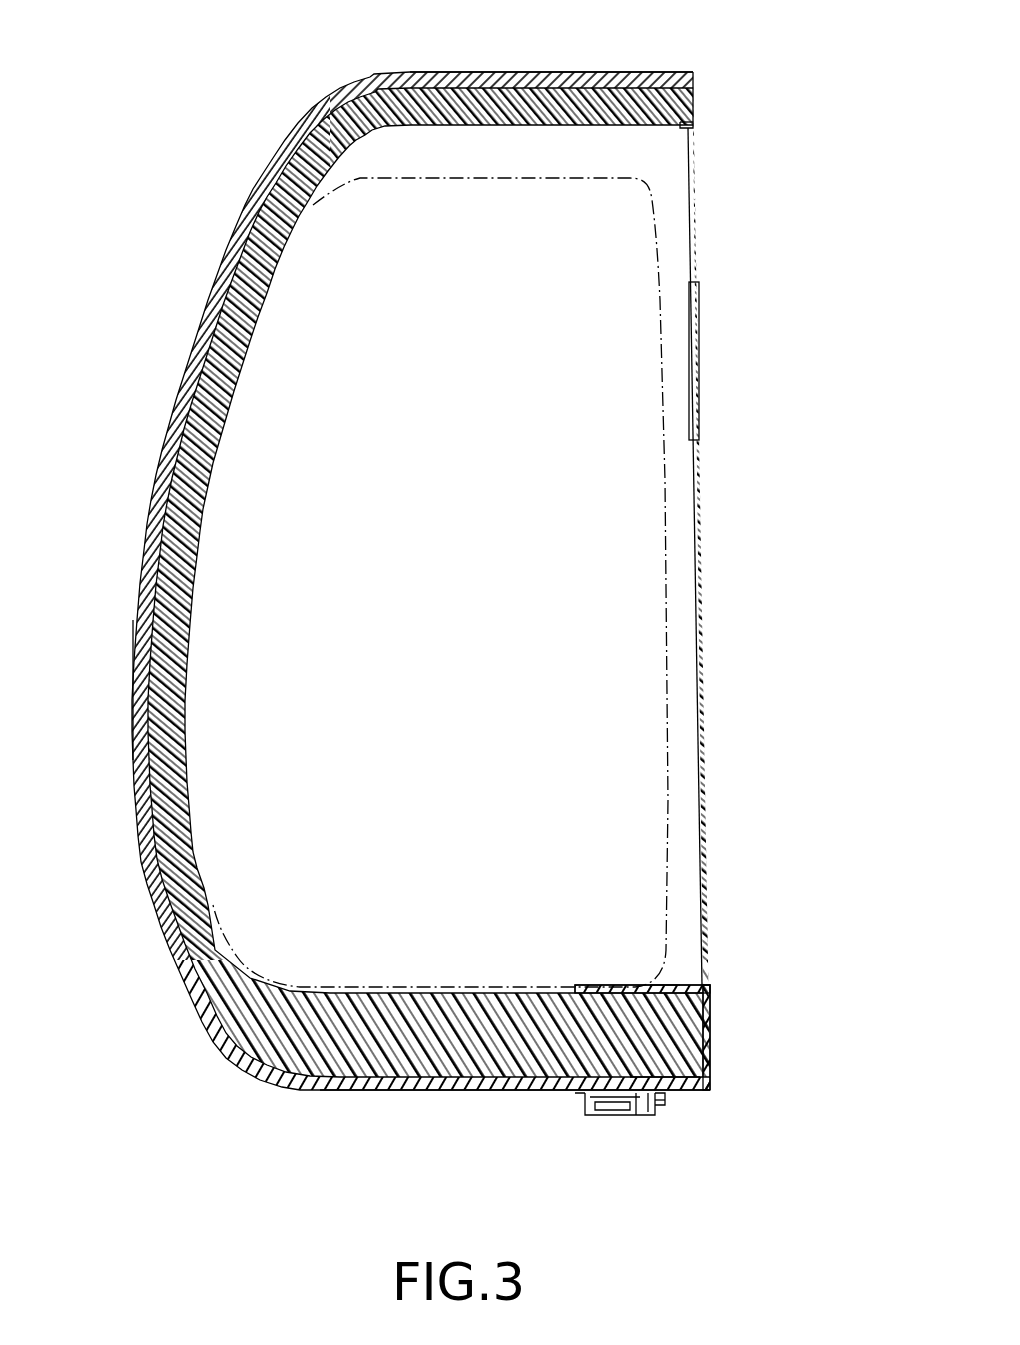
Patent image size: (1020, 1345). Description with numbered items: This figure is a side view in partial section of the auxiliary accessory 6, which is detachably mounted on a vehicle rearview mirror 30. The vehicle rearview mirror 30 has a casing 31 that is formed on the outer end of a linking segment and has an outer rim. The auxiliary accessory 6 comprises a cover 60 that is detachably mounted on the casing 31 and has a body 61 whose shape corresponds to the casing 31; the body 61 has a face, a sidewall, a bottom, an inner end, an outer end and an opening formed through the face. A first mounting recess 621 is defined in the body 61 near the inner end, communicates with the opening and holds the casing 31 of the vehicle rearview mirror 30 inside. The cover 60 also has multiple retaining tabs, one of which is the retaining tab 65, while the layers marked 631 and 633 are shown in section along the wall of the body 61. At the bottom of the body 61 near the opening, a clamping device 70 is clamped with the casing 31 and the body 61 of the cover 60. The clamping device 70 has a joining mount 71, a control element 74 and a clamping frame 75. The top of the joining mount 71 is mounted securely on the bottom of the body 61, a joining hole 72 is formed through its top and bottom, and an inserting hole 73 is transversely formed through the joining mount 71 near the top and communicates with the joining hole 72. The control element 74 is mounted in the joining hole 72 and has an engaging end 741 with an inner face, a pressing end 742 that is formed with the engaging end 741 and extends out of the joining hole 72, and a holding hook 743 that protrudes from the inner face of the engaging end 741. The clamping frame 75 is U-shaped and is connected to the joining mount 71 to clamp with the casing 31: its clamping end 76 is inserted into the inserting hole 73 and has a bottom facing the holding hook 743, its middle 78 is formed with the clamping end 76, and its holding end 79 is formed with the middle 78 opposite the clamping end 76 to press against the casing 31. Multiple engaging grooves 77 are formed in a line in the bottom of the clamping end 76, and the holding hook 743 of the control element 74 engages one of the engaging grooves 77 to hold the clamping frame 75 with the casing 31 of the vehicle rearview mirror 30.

The auxiliary accessory 6 is at (409, 576).
The cover 60 is at (417, 576).
The body 61 is at (183, 378).
The first mounting recess 621 is at (160, 466).
The top coating portion 631 is at (657, 72).
The bottom coating portion 633 is at (320, 1090).
The retaining tab 65 is at (690, 110).
The vehicle rearview mirror 30 is at (148, 540).
The casing 31 is at (134, 684).
The clamping device 70 is at (654, 1045).
The joining mount 71 is at (658, 1100).
The joining hole 72 is at (652, 1100).
The inserting hole 73 is at (580, 1113).
The control element 74 is at (570, 1147).
The engaging end 741 is at (640, 1112).
The pressing end 742 is at (578, 1115).
The holding hook 743 is at (625, 1115).
The clamping frame 75 is at (717, 1055).
The clamping end 76 is at (700, 1105).
The engaging grooves 77 is at (645, 1092).
The middle 78 is at (708, 990).
The holding end 79 is at (668, 985).